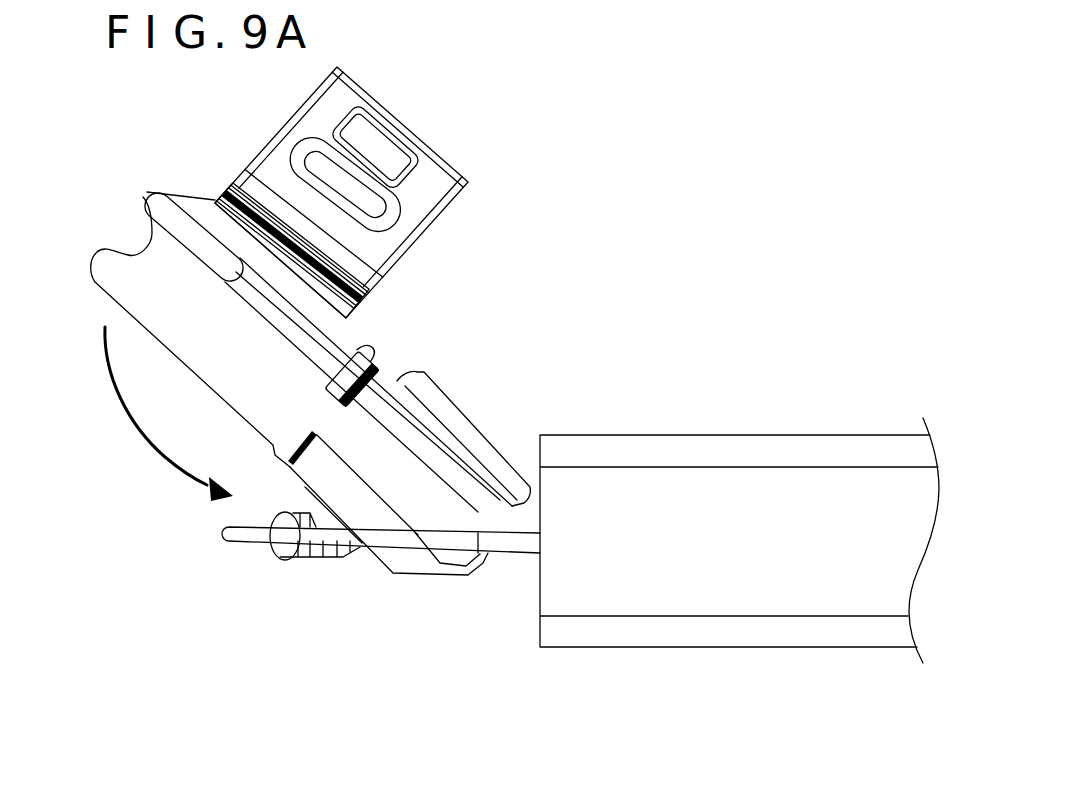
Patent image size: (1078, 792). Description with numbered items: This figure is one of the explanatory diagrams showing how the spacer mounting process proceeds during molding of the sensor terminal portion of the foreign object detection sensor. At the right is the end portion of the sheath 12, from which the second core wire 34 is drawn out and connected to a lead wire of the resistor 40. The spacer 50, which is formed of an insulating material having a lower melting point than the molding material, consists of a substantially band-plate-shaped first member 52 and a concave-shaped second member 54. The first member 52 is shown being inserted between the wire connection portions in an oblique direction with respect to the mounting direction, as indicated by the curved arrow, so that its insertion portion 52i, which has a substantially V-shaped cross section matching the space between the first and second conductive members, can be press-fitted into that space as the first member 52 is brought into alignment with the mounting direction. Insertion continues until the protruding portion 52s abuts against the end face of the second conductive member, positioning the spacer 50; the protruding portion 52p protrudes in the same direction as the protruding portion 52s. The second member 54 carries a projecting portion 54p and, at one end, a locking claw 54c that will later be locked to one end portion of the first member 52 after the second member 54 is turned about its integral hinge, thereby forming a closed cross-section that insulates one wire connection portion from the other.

The sheath 12 is at (713, 635).
The second core wire 34 is at (522, 543).
The resistor 40 is at (275, 560).
The spacer 50 is at (492, 126).
The first member 52 is at (445, 356).
The protruding portion 52p is at (145, 198).
The protruding portion 52s is at (372, 362).
The insertion portion 52i is at (520, 484).
The second member 54 is at (442, 239).
The projecting portion 54p is at (280, 135).
The locking claw 54c is at (398, 578).